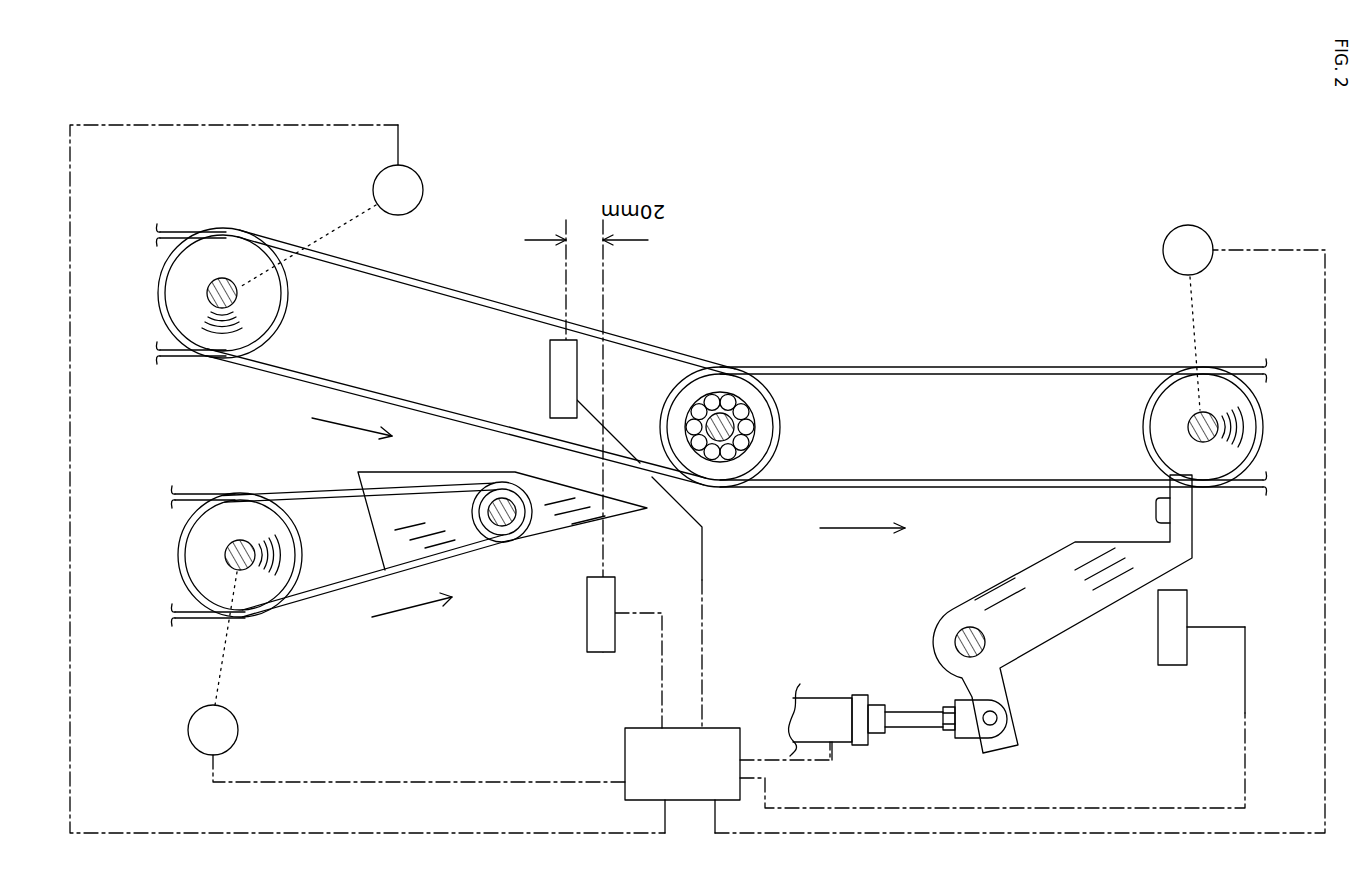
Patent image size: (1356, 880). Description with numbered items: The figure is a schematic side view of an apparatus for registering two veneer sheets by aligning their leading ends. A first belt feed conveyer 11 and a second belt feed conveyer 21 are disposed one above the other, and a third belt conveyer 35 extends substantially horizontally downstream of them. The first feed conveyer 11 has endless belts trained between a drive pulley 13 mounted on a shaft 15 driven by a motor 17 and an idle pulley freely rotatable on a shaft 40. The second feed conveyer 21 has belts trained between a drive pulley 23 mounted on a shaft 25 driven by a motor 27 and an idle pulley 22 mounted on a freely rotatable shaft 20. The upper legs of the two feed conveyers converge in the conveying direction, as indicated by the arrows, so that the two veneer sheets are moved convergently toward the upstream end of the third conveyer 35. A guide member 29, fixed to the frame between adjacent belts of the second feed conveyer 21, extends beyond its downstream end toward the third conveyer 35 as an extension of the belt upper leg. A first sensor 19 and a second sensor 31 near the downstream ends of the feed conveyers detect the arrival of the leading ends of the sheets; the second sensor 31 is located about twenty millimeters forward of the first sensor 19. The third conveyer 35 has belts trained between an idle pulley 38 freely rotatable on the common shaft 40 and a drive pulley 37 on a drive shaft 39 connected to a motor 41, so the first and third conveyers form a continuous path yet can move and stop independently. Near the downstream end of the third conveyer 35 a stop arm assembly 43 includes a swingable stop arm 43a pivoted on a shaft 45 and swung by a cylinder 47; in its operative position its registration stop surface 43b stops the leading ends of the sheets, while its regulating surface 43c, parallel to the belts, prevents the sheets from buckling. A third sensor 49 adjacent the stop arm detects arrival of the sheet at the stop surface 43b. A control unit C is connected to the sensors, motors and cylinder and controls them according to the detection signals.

The first belt feed conveyer 11 is at (459, 404).
The drive pulley 13 is at (263, 308).
The shaft 15 is at (213, 277).
The motor 17 is at (423, 190).
The first sensor 19 is at (553, 378).
The freely rotatable shaft 20 is at (497, 528).
The second belt feed conveyer 21 is at (367, 577).
The idle pulley 22 is at (508, 537).
The drive pulley 23 is at (265, 587).
The shaft 25 is at (242, 570).
The motor 27 is at (238, 733).
The guide member 29 is at (562, 527).
The second sensor 31 is at (603, 643).
The third belt conveyer 35 is at (905, 483).
The drive pulley 37 is at (1163, 428).
The idle pulley 38 is at (677, 417).
The drive shaft 39 is at (1213, 420).
The shaft 40 is at (729, 417).
The motor 41 is at (1163, 250).
The stop arm assembly 43 is at (1068, 640).
The swingable stop arm 43a is at (1032, 580).
The registration stop surface 43b is at (1165, 502).
The regulating surface 43c is at (1120, 540).
The shaft 45 is at (955, 642).
The cylinder 47 is at (832, 703).
The third sensor 49 is at (1172, 655).
The control unit C is at (713, 733).